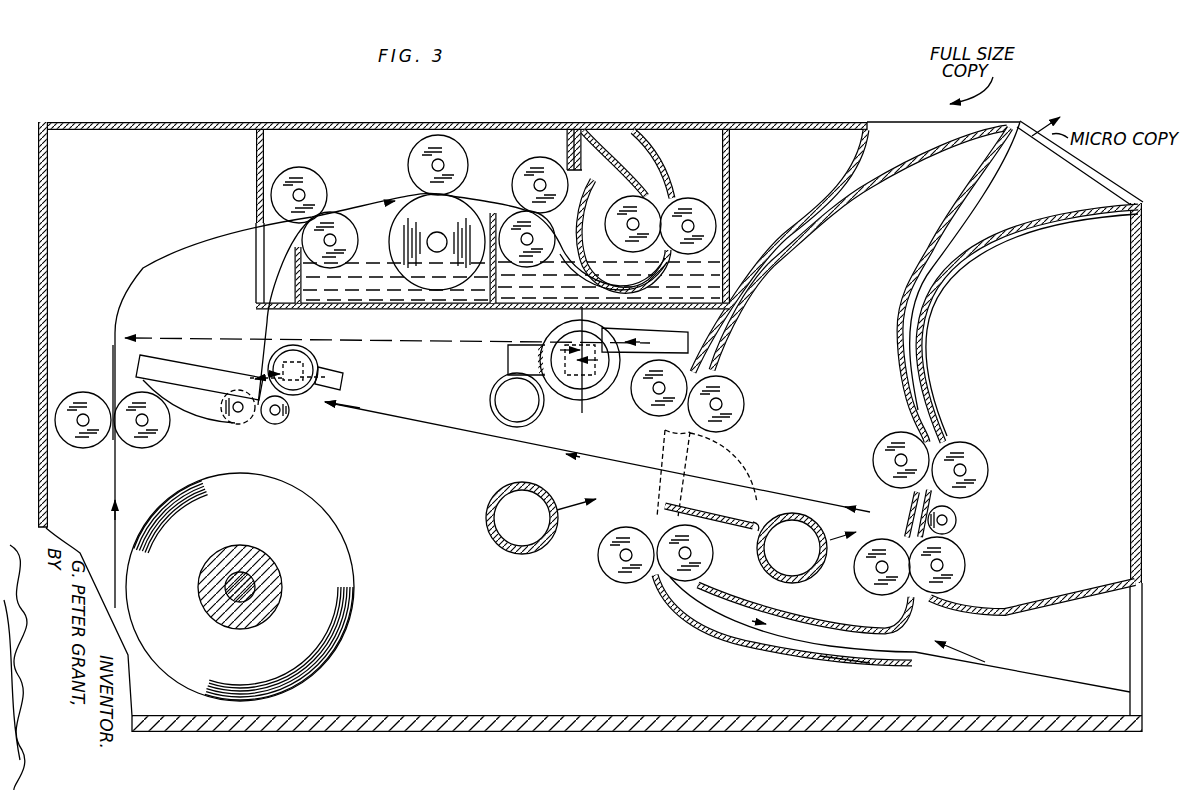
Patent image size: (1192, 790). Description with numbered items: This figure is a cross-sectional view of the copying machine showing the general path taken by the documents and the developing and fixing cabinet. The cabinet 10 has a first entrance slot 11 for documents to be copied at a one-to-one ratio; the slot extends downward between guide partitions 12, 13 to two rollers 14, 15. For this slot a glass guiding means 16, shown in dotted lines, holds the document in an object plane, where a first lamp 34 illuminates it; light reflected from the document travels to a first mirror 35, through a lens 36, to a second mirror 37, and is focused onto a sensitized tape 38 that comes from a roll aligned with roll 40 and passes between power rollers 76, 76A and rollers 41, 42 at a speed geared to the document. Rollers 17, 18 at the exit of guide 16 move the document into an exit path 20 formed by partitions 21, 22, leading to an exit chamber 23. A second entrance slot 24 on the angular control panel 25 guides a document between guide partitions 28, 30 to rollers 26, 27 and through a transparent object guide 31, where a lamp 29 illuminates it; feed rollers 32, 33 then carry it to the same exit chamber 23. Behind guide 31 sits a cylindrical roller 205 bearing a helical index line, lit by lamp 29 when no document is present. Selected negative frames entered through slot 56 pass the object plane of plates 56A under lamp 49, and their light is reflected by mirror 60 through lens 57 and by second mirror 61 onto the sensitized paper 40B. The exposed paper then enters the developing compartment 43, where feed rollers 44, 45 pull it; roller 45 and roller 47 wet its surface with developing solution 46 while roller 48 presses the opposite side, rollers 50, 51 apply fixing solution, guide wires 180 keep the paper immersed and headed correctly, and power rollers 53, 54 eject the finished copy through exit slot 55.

The cabinet 10 is at (186, 123).
The first entrance slot 11 is at (892, 126).
The guide partition 12 is at (783, 250).
The guide partition 13 is at (822, 242).
The roller 14 is at (652, 414).
The roller 15 is at (740, 398).
The glass guiding means 16 is at (657, 489).
The roller 17 is at (705, 555).
The roller 18 is at (617, 578).
The exit path 20 is at (731, 634).
The partition 21 is at (782, 613).
The partition 22 is at (810, 650).
The exit chamber 23 is at (1130, 623).
The second entrance slot 24 is at (1082, 186).
The angular control panel 25 is at (1132, 202).
The roller 26 is at (978, 457).
The roller 27 is at (882, 445).
The guide partition 28 is at (925, 334).
The lamp 29 is at (817, 537).
The guide partition 30 is at (898, 337).
The transparent object guide 31 is at (912, 500).
The feed roller 32 is at (965, 558).
The feed roller 33 is at (866, 584).
The first lamp 34 is at (487, 532).
The first mirror 35 is at (186, 373).
The lens 36 is at (300, 398).
The second mirror 37 is at (338, 367).
The sensitized tape 38 is at (266, 322).
The roll 40 is at (322, 512).
The sensitized paper 40B is at (113, 377).
The roller 41 is at (150, 449).
The roller 42 is at (80, 446).
The developing compartment 43 is at (365, 132).
The feed roller 44 is at (320, 184).
The feed roller 45 is at (357, 238).
The developing solution 46 is at (405, 300).
The roller 47 is at (407, 207).
The roller 48 is at (460, 155).
The lamp 49 is at (489, 404).
The roller 50 is at (554, 160).
The roller 51 is at (510, 208).
The power roller 53 is at (627, 198).
The power roller 54 is at (708, 190).
The exit slot 55 is at (617, 127).
The slot 56 is at (569, 122).
The plates 56A is at (582, 414).
The lens 57 is at (577, 392).
The mirror 60 is at (508, 346).
The second mirror 61 is at (640, 355).
The power roller 76 is at (277, 424).
The power roller 76A is at (236, 421).
The guide wires 180 is at (584, 245).
The cylindrical roller 205 is at (957, 518).